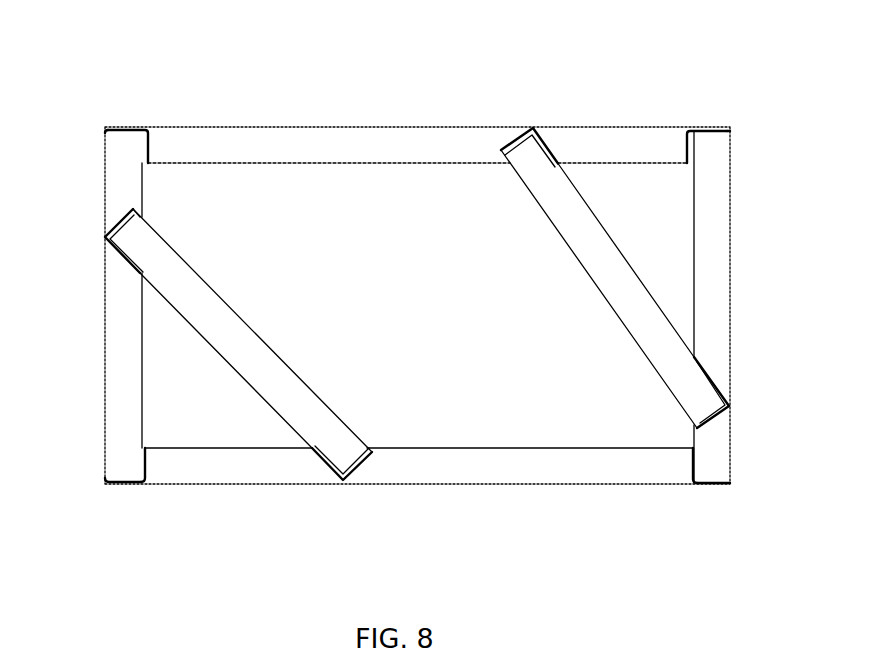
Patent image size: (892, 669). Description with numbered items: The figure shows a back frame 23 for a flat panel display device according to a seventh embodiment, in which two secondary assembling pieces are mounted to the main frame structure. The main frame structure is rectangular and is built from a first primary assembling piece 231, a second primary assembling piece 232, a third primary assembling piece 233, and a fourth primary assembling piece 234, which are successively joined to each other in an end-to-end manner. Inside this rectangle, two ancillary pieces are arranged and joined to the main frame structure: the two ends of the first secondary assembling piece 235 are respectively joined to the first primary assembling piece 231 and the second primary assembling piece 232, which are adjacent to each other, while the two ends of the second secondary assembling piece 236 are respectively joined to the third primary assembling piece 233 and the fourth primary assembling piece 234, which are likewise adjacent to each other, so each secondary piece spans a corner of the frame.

The back frame 23 is at (417, 253).
The first primary assembling piece 231 is at (463, 143).
The second primary assembling piece 232 is at (717, 302).
The third primary assembling piece 233 is at (403, 475).
The fourth primary assembling piece 234 is at (113, 308).
The first secondary assembling piece 235 is at (578, 242).
The second secondary assembling piece 236 is at (277, 372).